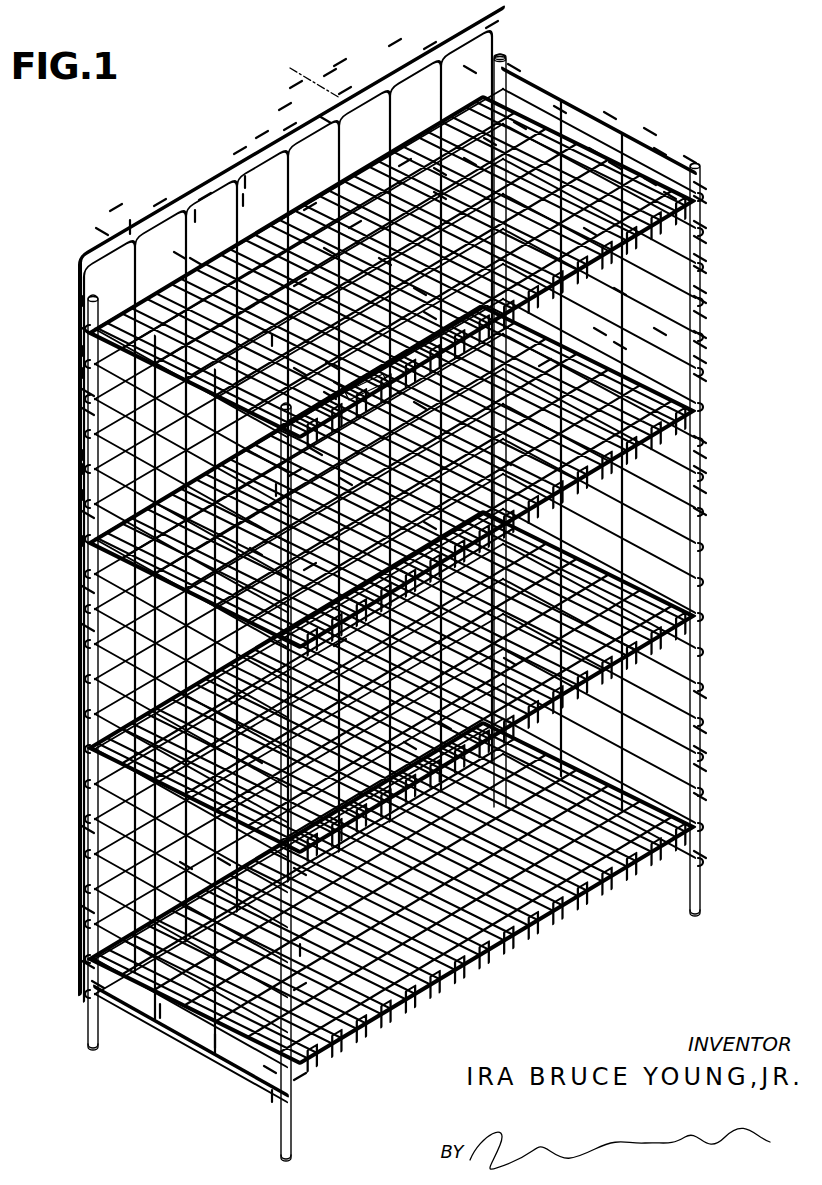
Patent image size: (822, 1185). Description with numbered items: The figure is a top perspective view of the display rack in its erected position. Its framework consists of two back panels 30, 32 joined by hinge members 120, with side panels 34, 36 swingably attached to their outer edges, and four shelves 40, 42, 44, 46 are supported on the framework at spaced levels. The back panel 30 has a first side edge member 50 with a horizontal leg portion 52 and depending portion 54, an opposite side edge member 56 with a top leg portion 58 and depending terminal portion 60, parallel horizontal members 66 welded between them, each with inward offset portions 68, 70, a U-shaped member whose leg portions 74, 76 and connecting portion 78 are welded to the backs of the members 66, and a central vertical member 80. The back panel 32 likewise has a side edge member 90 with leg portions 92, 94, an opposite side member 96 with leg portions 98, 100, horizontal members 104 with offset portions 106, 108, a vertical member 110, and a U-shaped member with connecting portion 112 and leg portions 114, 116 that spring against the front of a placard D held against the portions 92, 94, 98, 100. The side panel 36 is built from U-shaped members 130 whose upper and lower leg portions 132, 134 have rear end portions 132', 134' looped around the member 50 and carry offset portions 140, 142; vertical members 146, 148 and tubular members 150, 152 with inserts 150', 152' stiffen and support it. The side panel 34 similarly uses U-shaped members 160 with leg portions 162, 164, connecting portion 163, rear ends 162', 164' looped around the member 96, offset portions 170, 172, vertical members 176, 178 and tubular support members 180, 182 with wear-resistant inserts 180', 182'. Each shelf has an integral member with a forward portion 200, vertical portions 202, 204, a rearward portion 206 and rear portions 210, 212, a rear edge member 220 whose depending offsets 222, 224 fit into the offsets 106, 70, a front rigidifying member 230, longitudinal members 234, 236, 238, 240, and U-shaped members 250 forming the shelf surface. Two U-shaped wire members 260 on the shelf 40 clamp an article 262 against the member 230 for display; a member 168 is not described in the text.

The back panel 30 is at (213, 133).
The back panel 32 is at (330, 72).
The side panel 34 is at (640, 110).
The side panel 36 is at (145, 1008).
The shelf 40 is at (704, 205).
The shelf 42 is at (702, 412).
The shelf 44 is at (702, 617).
The shelf 46 is at (702, 822).
The first side edge member 50 is at (79, 250).
The horizontally disposed leg portion 52 is at (116, 207).
The depending portion 54 is at (160, 202).
The opposite side edge member 56 is at (262, 134).
The top leg portion 58 is at (240, 150).
The depending terminal portion 60 is at (195, 216).
The horizontal members 66 is at (180, 256).
The inwardly extending offset portion 68 is at (82, 412).
The inwardly extending offset portion 70 is at (243, 200).
The vertically extending leg portion 74 is at (130, 227).
The vertically extending leg portion 76 is at (245, 182).
The upper horizontally extending connecting portion 78 is at (205, 196).
The vertically extending member 80 is at (196, 262).
The first side edge member 90 is at (290, 126).
The horizontally extending leg portion 92 is at (285, 106).
The downwardly extending leg portion 94 is at (345, 90).
The opposite side member 96 is at (492, 24).
The horizontally extending leg portion 98 is at (430, 45).
The depending leg portion 100 is at (340, 62).
The horizontally disposed members 104 is at (560, 110).
The inwardly extending offset portion 106 is at (325, 120).
The inwardly extending offset portion 108 is at (470, 70).
The vertically extending member 110 is at (440, 196).
The connecting portion 112 is at (395, 42).
The depending vertical leg portion 114 is at (296, 84).
The depending vertical leg portion 116 is at (405, 162).
The hinge members 120 is at (330, 396).
The U-shaped members 130 is at (290, 472).
The upper leg portion 132 is at (45, 470).
The rear end portion 132' is at (50, 375).
The lower leg portion 134 is at (57, 454).
The rear end portion 134' is at (56, 492).
The inwardly extending offset portion 140 is at (300, 372).
The inwardly extending offset portion 142 is at (276, 490).
The vertically extending member 146 is at (160, 1012).
The vertically extending member 148 is at (215, 1042).
The tubular member 150 is at (63, 651).
The insert 150' is at (80, 1065).
The tubular member 152 is at (323, 782).
The insert 152' is at (317, 1160).
The U-shaped members 160 is at (700, 186).
The upper leg portion 162 is at (697, 292).
The rear end 162' is at (543, 58).
The connecting portion 163 is at (700, 290).
The lower leg portion 164 is at (670, 368).
The rear end 164' is at (475, 129).
The wire 168 is at (100, 232).
The inwardly extending offset portion 170 is at (690, 160).
The inwardly extending offset portion 172 is at (700, 315).
The vertically extending member 176 is at (610, 116).
The vertically extending member 178 is at (650, 132).
The support member 180 is at (539, 430).
The wear-resistant insert 180' is at (534, 438).
The support member 182 is at (733, 539).
The wear-resistant insert 182' is at (733, 534).
The upper forward portion 200 is at (600, 332).
The portion 202 is at (700, 200).
The portion 204 is at (316, 452).
The rearwardly extending portion 206 is at (650, 182).
The portion 210 is at (470, 162).
The short extending portion 212 is at (82, 350).
The rear edge member 220 is at (355, 224).
The depending offset portion 222 is at (310, 206).
The depending offset portion 224 is at (300, 282).
The horizontally extending member 230 is at (545, 362).
The horizontally extending member 234 is at (670, 196).
The horizontally extending member 236 is at (615, 166).
The horizontally extending member 238 is at (595, 152).
The horizontally extending member 240 is at (520, 126).
The U-shaped members 250 is at (340, 386).
The U-shaped wire member 260 is at (620, 292).
The article 262 is at (346, 482).
The placard D is at (320, 72).